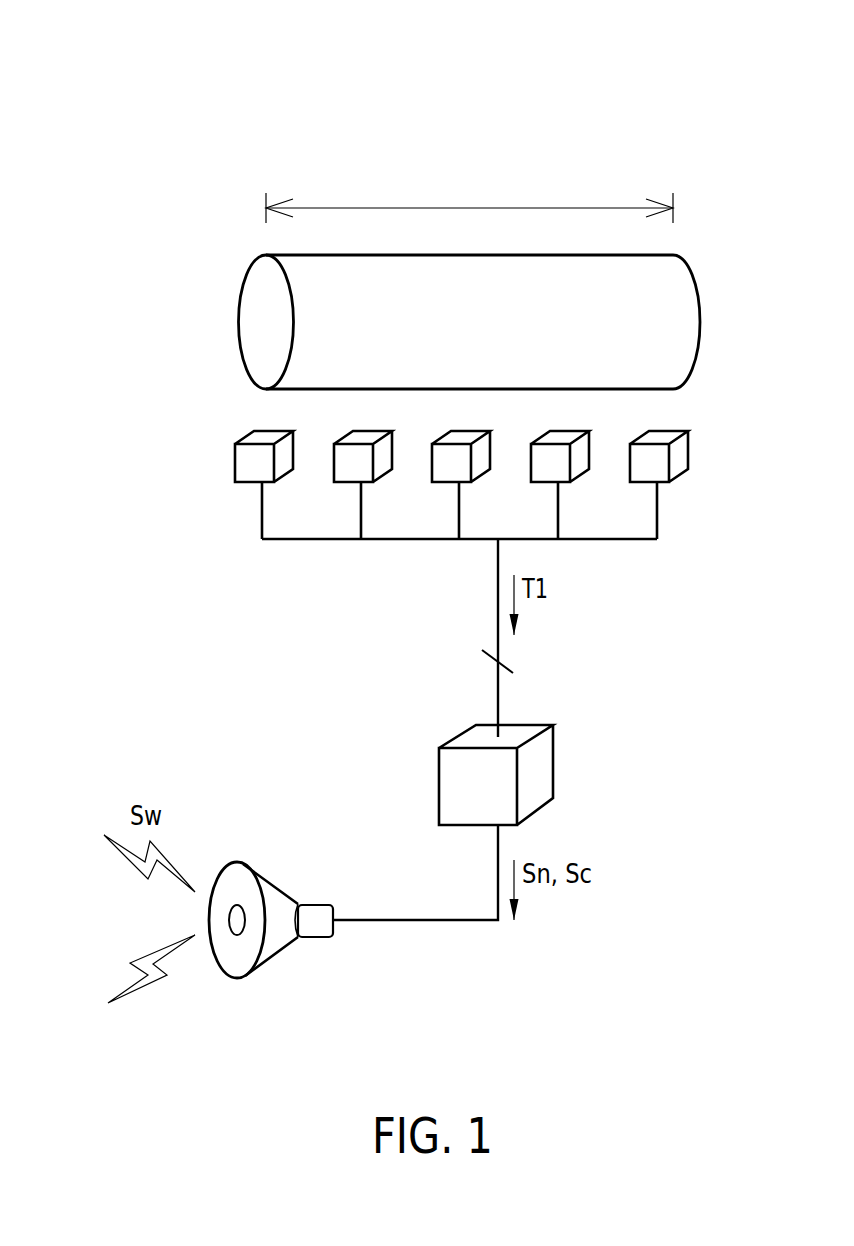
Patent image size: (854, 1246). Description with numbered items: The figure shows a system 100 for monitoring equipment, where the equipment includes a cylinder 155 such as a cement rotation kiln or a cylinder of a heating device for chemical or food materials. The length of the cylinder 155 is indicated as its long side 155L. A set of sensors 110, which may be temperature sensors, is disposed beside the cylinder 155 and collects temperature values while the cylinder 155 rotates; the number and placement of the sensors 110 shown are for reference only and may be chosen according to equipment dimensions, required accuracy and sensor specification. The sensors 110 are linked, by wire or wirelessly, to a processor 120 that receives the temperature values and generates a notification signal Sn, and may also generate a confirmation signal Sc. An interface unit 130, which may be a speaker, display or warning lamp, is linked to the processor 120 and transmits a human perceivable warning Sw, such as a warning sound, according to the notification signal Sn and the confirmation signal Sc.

The system 100 is at (677, 108).
The set of sensors 110 is at (235, 468).
The processor 120 is at (499, 798).
The interface unit 130 is at (277, 883).
The cylinder 155 is at (488, 338).
The long side 155L is at (469, 200).